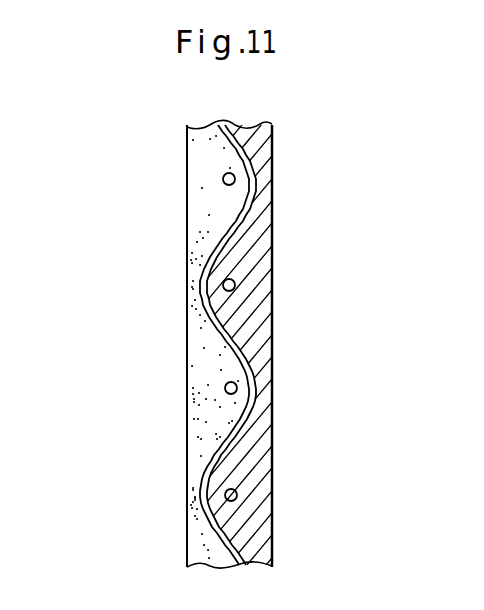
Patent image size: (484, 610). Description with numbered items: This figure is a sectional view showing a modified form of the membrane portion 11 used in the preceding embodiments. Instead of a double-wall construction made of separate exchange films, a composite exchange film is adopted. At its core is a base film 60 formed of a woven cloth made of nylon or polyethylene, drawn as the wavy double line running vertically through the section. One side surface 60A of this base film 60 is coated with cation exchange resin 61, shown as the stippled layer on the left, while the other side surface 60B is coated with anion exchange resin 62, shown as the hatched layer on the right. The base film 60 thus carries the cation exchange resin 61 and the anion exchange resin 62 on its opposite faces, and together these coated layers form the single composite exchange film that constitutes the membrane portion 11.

The membrane portion 11 is at (275, 346).
The base film 60 is at (232, 469).
The one side surface 60A is at (223, 230).
The other side surface 60B is at (213, 263).
The cation exchange resin 61 is at (187, 152).
The anion exchange resin 62 is at (264, 150).